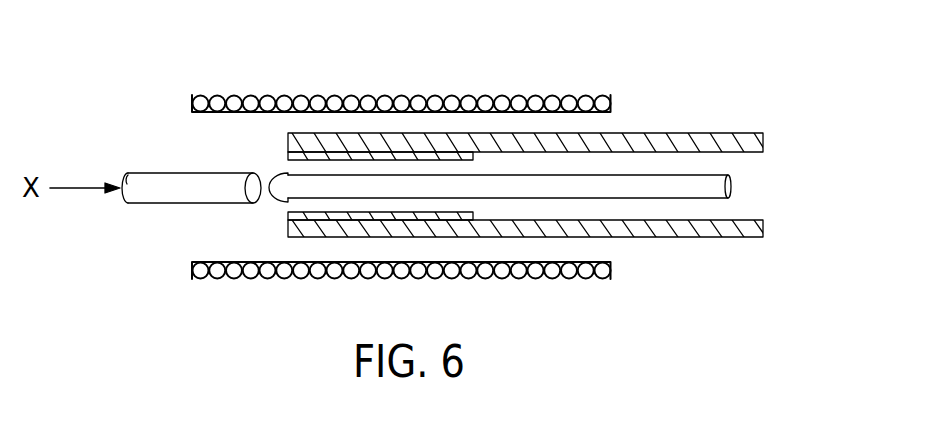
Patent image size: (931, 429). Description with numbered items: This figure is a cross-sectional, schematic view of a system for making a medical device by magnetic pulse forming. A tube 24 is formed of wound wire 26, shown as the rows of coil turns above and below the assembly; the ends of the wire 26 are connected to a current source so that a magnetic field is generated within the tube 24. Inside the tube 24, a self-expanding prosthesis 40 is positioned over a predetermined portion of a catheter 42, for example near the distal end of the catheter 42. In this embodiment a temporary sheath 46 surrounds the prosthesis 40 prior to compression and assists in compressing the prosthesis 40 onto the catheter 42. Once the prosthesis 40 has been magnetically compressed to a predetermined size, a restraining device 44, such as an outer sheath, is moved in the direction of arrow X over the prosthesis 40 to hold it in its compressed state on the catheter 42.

The tube 24 is at (598, 72).
The wound wire 26 is at (220, 272).
The self-expanding prosthesis 40 is at (287, 156).
The catheter 42 is at (730, 187).
The restraining device 44 is at (160, 181).
The temporary sheath 46 is at (716, 137).